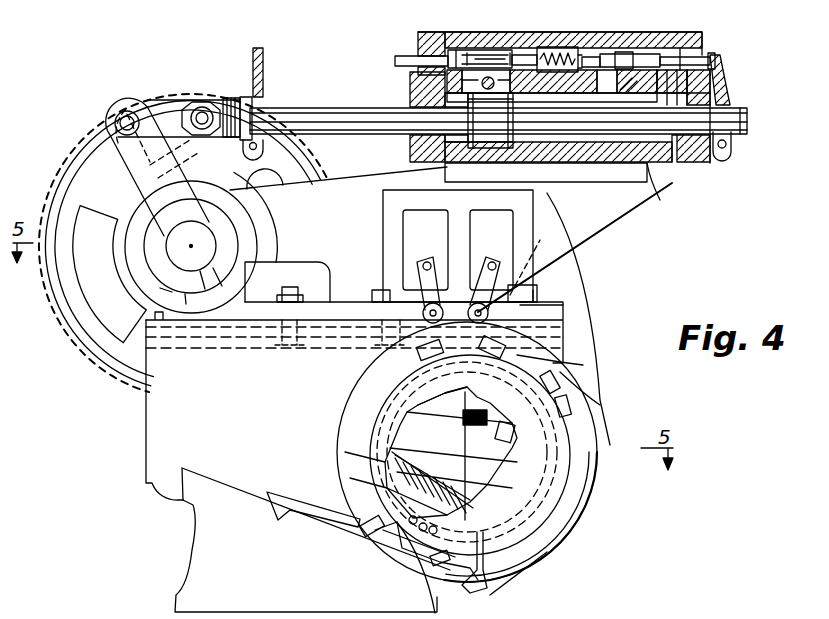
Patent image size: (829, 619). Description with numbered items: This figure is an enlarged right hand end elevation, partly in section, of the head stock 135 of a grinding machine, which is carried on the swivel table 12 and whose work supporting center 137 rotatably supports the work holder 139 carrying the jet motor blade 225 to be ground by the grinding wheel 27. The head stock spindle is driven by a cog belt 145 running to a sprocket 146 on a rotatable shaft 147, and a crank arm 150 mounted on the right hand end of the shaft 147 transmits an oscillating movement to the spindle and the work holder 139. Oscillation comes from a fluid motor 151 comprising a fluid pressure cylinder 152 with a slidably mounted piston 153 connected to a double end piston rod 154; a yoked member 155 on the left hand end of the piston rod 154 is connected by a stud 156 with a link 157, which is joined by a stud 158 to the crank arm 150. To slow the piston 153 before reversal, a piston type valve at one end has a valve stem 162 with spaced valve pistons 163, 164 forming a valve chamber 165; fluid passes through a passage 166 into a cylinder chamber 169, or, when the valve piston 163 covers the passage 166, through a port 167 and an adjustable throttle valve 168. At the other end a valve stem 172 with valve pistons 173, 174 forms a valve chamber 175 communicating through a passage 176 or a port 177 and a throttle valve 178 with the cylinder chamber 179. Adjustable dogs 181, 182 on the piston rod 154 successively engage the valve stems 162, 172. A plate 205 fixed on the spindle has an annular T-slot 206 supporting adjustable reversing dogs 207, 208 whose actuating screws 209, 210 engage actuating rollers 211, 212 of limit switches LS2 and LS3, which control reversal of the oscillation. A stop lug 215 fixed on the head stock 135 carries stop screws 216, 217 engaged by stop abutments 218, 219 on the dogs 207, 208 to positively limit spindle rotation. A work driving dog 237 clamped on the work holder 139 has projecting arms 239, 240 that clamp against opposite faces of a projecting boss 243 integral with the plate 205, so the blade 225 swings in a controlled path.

The swivel table 12 is at (193, 547).
The grinding wheel 27 is at (517, 570).
The head stock 135 is at (168, 425).
The work supporting center 137 is at (408, 415).
The work holder 139 is at (565, 502).
The cog belt 145 is at (72, 155).
The sprocket 146 is at (76, 154).
The rotatable shaft 147 is at (185, 246).
The crank arm 150 is at (108, 110).
The fluid motor 151 is at (702, 167).
The fluid pressure cylinder 152 is at (657, 193).
The piston 153 is at (546, 140).
The double end piston rod 154 is at (345, 119).
The yoked member 155 is at (220, 98).
The stud 156 is at (201, 108).
The link 157 is at (163, 113).
The stud 158 is at (127, 112).
The valve stem 162 is at (408, 58).
The valve piston 163 is at (457, 49).
The valve piston 164 is at (516, 53).
The valve chamber 165 is at (481, 50).
The passage 166 is at (478, 80).
The port 167 is at (522, 90).
The adjustable throttle valve 168 is at (450, 90).
The cylinder chamber 169 is at (442, 143).
The valve stem 172 is at (714, 56).
The valve piston 173 is at (660, 57).
The valve piston 174 is at (592, 56).
The valve chamber 175 is at (620, 54).
The passage 176 is at (700, 70).
The port 177 is at (618, 86).
The throttle valve 178 is at (698, 90).
The cylinder chamber 179 is at (670, 167).
The adjustable dog 181 is at (272, 45).
The adjustable dog 182 is at (720, 60).
The plate 205 is at (570, 488).
The annular T-slot 206 is at (555, 533).
The reversing dog 207 is at (470, 582).
The reversing dog 208 is at (580, 418).
The actuating screw 209 is at (362, 538).
The actuating screw 210 is at (540, 320).
The actuating roller 211 is at (425, 303).
The actuating roller 212 is at (540, 302).
The stop lug 215 is at (460, 347).
The stop screw 216 is at (440, 352).
The stop screw 217 is at (540, 364).
The stop abutment 218 is at (407, 540).
The stop abutment 219 is at (560, 372).
The jet motor blade 225 is at (392, 442).
The work driving dog 237 is at (497, 401).
The projecting arm 239 is at (512, 424).
The projecting arm 240 is at (352, 470).
The projecting boss 243 is at (402, 490).
The limit switch LS2 is at (417, 233).
The limit switch LS3 is at (540, 215).